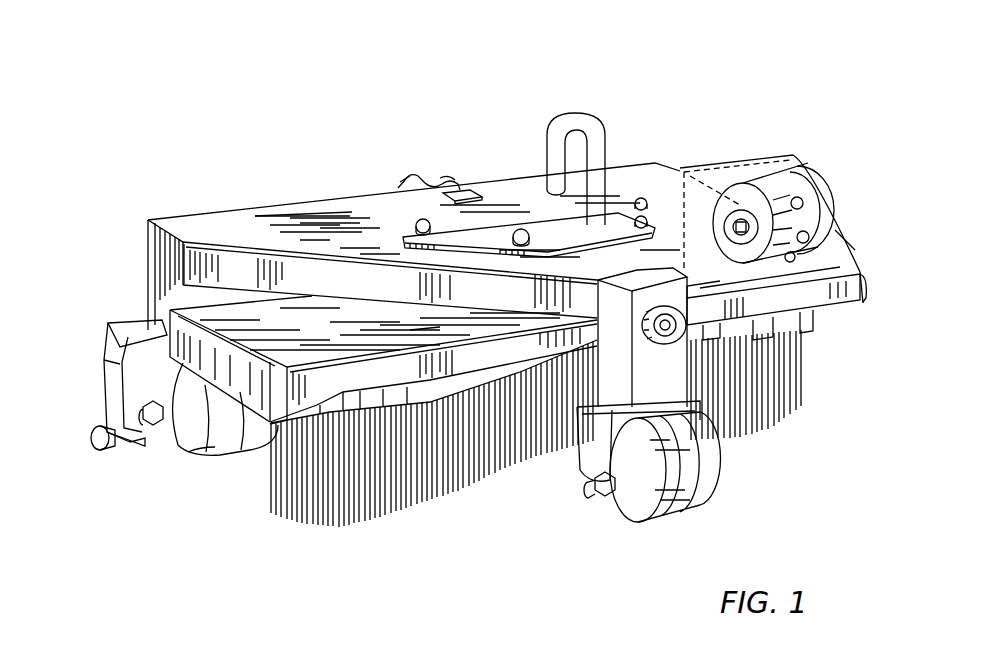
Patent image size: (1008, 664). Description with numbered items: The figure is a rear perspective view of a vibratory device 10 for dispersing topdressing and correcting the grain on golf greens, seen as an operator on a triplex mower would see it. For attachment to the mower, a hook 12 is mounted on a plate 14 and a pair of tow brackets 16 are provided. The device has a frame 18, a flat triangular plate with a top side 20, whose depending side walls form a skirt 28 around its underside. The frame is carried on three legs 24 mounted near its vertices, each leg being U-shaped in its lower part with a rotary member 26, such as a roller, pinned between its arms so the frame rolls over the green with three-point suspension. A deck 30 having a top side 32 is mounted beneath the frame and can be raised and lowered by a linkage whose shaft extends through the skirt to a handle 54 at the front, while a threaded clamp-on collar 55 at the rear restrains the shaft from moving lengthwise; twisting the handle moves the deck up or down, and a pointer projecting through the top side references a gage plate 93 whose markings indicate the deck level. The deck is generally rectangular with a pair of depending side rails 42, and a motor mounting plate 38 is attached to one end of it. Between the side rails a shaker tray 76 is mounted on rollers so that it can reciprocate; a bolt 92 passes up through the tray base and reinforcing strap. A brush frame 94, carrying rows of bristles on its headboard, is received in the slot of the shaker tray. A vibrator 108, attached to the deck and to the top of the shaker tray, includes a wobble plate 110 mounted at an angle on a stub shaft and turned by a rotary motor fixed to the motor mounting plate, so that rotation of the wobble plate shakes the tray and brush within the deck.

The vibratory device 10 is at (702, 78).
The hook 12 is at (585, 116).
The plate 14 is at (508, 225).
The tow brackets 16 is at (115, 410).
The frame 18 is at (310, 210).
The top side 20 is at (367, 210).
The legs 24 is at (143, 288).
The rotary member 26 is at (170, 445).
The skirt 28 is at (233, 283).
The deck 30 is at (250, 320).
The top side 32 is at (415, 328).
The motor mounting plate 38 is at (856, 233).
The side rails 42 is at (267, 423).
The handle 54 is at (420, 178).
The clamp-on collar 55 is at (672, 326).
The shaker tray 76 is at (355, 405).
The bolt 92 is at (797, 290).
The gage plate 93 is at (462, 193).
The brush frame 94 is at (258, 490).
The vibrator 108 is at (827, 160).
The wobble plate 110 is at (742, 192).